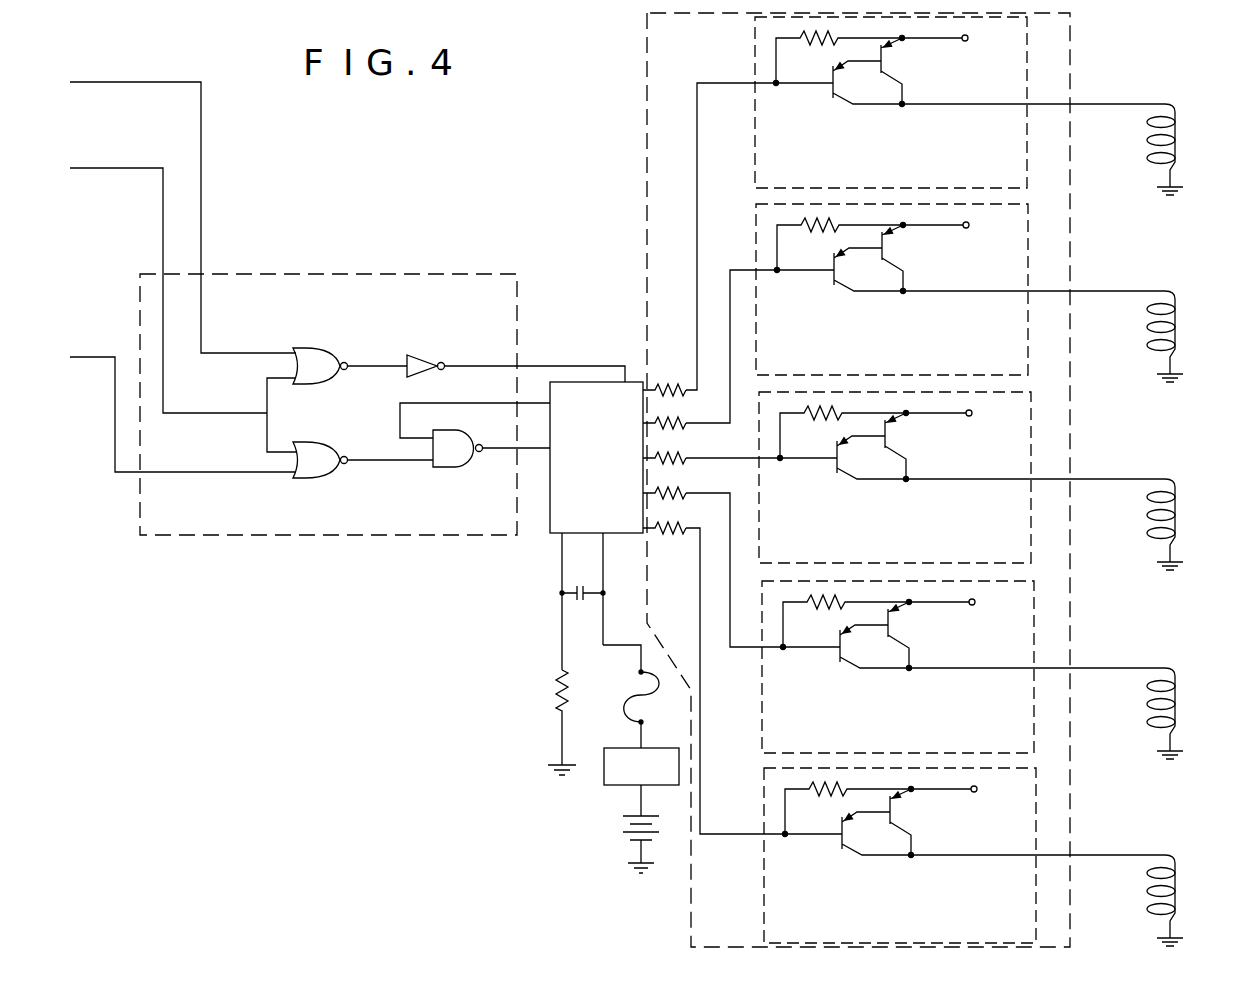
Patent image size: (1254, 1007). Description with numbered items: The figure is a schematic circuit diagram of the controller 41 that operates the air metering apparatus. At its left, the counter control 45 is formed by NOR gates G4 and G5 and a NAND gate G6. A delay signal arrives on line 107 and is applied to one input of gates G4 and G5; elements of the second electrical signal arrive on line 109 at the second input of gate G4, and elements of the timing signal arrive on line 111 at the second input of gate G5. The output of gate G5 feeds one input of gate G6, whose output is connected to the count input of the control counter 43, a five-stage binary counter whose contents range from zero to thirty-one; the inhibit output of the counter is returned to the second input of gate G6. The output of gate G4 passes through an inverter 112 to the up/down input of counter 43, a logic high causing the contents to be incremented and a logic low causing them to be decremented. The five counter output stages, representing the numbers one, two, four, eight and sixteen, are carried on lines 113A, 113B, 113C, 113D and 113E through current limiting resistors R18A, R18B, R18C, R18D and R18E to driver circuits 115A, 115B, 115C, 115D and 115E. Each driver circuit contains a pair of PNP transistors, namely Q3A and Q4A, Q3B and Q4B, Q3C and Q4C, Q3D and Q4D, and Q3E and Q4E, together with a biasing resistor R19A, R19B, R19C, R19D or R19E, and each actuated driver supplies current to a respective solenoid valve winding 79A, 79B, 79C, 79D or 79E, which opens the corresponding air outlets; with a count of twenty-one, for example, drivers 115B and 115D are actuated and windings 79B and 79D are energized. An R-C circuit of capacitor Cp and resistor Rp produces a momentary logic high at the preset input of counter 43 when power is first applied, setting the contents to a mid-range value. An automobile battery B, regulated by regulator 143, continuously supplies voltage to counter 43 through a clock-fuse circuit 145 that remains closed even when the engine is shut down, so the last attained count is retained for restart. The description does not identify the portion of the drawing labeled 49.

The controller 41 is at (562, 190).
The control counter 43 is at (549, 538).
The counter control 45 is at (392, 273).
The output driver section 49 is at (647, 50).
The line 107 is at (158, 148).
The line 109 is at (165, 82).
The line 111 is at (112, 328).
The inverter 112 is at (430, 356).
The line 113A is at (697, 168).
The line 113B is at (730, 300).
The line 113C is at (752, 462).
The line 113D is at (730, 655).
The line 113E is at (750, 838).
The driver circuit 115A is at (755, 65).
The driver circuit 115B is at (756, 218).
The driver circuit 115C is at (759, 542).
The driver circuit 115D is at (762, 742).
The driver circuit 115E is at (760, 915).
The regulator 143 is at (616, 786).
The clock-fuse circuit 145 is at (640, 672).
The automobile battery B is at (628, 817).
The capacitor Cp is at (590, 585).
The resistor Rp is at (548, 690).
The NOR gate G4 is at (318, 348).
The NOR gate G5 is at (318, 478).
The NAND gate G6 is at (455, 467).
The current limiting resistor R18A is at (692, 362).
The current limiting resistor R18B is at (660, 420).
The current limiting resistor R18C is at (670, 456).
The current limiting resistor R18D is at (670, 492).
The current limiting resistor R18E is at (664, 524).
The biasing resistor R19A is at (838, 46).
The biasing resistor R19B is at (839, 233).
The biasing resistor R19C is at (842, 421).
The biasing resistor R19D is at (845, 610).
The biasing resistor R19E is at (847, 797).
The PNP transistor Q3A is at (831, 94).
The PNP transistor Q3B is at (832, 281).
The PNP transistor Q3C is at (835, 470).
The PNP transistor Q3D is at (838, 658).
The PNP transistor Q3E is at (840, 845).
The PNP transistor Q4A is at (885, 62).
The PNP transistor Q4B is at (886, 249).
The PNP transistor Q4C is at (889, 437).
The PNP transistor Q4D is at (892, 626).
The PNP transistor Q4E is at (894, 813).
The winding 79A is at (1176, 160).
The winding 79B is at (1176, 344).
The winding 79C is at (1176, 525).
The winding 79D is at (1176, 716).
The winding 79E is at (1176, 888).